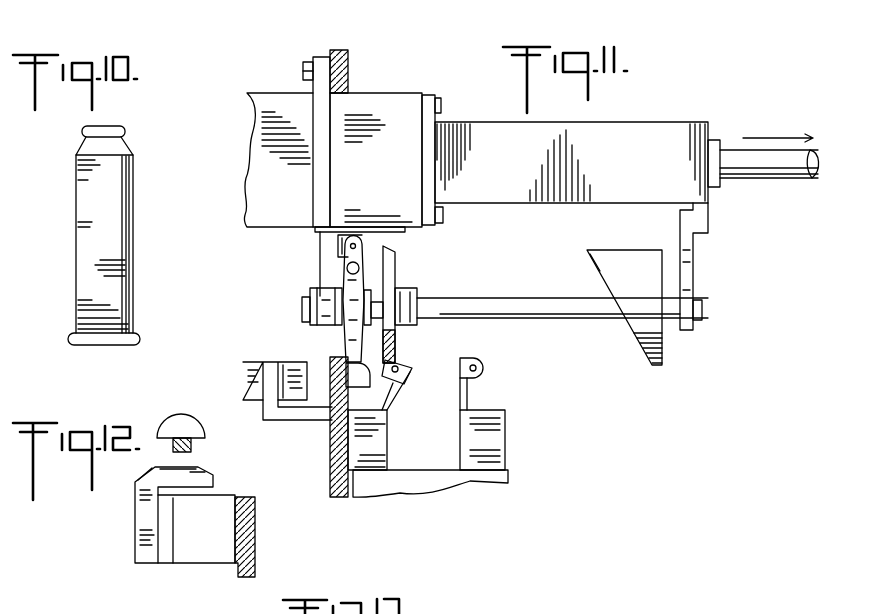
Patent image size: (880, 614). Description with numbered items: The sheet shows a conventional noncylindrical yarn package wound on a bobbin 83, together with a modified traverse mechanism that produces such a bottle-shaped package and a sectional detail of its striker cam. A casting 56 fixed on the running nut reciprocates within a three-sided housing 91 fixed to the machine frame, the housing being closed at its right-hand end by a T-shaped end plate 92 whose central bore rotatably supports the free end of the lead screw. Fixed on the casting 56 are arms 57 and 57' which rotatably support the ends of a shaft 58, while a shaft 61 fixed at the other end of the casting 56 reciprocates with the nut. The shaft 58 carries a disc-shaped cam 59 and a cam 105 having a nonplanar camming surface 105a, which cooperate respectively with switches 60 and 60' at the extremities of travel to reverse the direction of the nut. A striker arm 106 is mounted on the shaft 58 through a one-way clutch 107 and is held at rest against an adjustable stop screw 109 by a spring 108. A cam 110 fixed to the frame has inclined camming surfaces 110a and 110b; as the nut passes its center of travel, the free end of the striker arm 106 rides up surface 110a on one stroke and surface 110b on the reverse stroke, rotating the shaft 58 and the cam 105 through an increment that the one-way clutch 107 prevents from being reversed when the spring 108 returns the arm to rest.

In FIG. 10, the bobbin 83 is at (124, 132).
In FIG. 11, the three-sided housing 91 is at (268, 162).
In FIG. 11, the arm 57 is at (305, 173).
In FIG. 11, the casting 56 is at (396, 83).
In FIG. 11, the T-shaped end plate 92 is at (439, 217).
In FIG. 11, the spring 108 is at (364, 237).
In FIG. 12, the striker arm 106 is at (197, 446).
In FIG. 11, the striker arm 106 is at (346, 348).
In FIG. 11, the stop screw 109 is at (346, 268).
In FIG. 11, the one-way clutch 107 is at (342, 280).
In FIG. 11, the cam 59 is at (396, 270).
In FIG. 11, the shaft 58 is at (568, 321).
In FIG. 11, the cam 105 is at (652, 305).
In FIG. 11, the camming surface 105a is at (597, 268).
In FIG. 11, the arm 57' is at (705, 266).
In FIG. 11, the shaft 61 is at (805, 158).
In FIG. 11, the switch 60 is at (395, 427).
In FIG. 11, the switch 60' is at (500, 414).
In FIG. 12, the cam 110 is at (140, 525).
In FIG. 11, the cam 110 is at (255, 362).
In FIG. 12, the camming surface 110a is at (150, 470).
In FIG. 12, the camming surface 110b is at (206, 474).